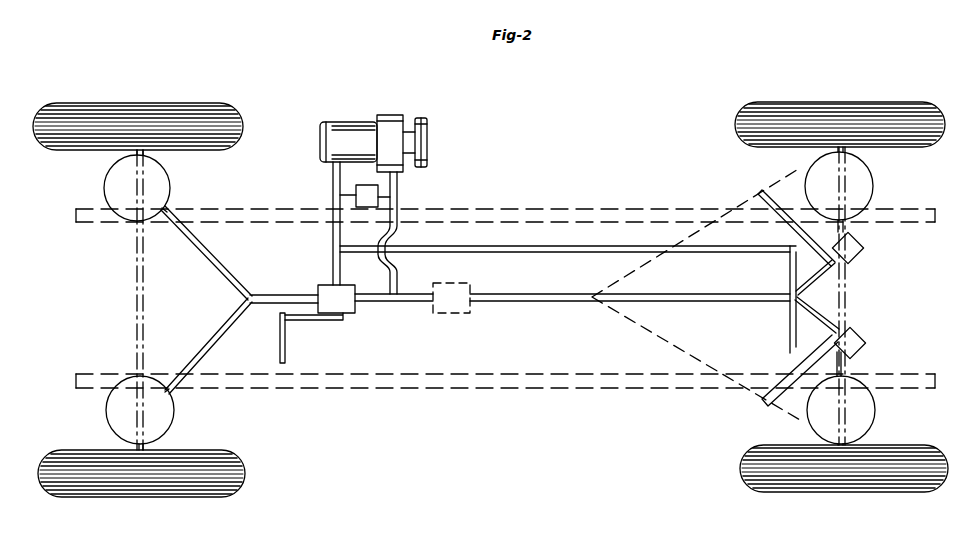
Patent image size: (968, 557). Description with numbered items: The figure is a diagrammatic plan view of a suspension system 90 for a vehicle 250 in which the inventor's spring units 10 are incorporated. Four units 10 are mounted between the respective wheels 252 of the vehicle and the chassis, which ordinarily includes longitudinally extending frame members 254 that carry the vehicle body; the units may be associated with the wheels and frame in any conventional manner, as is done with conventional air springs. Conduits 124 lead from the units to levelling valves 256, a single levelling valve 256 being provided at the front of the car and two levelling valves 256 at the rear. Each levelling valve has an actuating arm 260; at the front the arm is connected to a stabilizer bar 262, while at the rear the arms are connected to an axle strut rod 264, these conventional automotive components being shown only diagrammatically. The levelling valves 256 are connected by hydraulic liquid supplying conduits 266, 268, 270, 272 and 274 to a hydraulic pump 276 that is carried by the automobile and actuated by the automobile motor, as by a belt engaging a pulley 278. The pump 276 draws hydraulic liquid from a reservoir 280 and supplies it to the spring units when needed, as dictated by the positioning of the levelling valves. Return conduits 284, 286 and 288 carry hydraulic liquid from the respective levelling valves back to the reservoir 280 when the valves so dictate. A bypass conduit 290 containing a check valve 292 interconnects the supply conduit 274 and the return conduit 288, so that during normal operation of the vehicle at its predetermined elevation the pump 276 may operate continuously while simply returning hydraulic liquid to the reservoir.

The spring unit 10 is at (100, 177).
The suspension system 90 is at (128, 331).
The conduit 124 is at (208, 338).
The vehicle 250 is at (130, 267).
The wheel 252 is at (92, 101).
The frame member 254 is at (482, 212).
The levelling valve 256 is at (318, 290).
The actuating arm 260 is at (290, 318).
The stabilizer bar 262 is at (280, 341).
The axle strut rod 264 is at (788, 172).
The hydraulic liquid supplying conduit 266 is at (373, 294).
The hydraulic liquid supplying conduit 268 is at (568, 298).
The hydraulic liquid supplying conduit 270 is at (817, 274).
The hydraulic liquid supplying conduit 272 is at (820, 318).
The hydraulic liquid supplying conduit 274 is at (397, 205).
The hydraulic pump 276 is at (400, 114).
The pulley 278 is at (427, 136).
The reservoir 280 is at (330, 124).
The return conduit 284 is at (642, 246).
The return conduit 286 is at (333, 270).
The return conduit 288 is at (333, 182).
The bypass conduit 290 is at (340, 197).
The check valve 292 is at (378, 192).